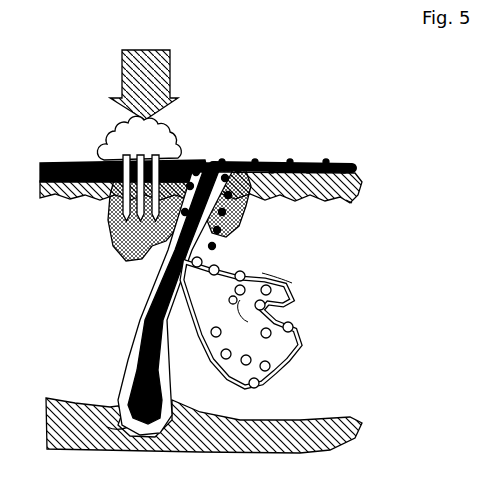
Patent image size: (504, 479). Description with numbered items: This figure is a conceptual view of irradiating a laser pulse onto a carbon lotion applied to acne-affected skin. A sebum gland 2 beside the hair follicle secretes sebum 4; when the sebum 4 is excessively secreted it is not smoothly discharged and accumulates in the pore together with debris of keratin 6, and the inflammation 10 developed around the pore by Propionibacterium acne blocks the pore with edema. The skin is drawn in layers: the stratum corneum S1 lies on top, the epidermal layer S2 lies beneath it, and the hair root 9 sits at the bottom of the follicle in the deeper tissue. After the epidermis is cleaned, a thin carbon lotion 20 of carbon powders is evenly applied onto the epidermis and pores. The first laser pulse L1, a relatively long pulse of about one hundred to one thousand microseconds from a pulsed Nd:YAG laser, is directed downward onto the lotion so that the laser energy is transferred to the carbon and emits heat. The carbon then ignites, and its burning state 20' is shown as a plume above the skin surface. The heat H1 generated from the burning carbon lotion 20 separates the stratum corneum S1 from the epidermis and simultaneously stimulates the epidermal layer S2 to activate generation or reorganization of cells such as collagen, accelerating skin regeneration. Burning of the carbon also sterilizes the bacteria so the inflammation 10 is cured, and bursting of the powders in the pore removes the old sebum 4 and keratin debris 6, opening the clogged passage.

The first laser pulse L1 is at (170, 78).
The burning state of the carbon lotion 20' is at (112, 133).
The carbon lotion 20 is at (196, 150).
The debris of keratin 6 is at (208, 167).
The stratum corneum S1 is at (352, 173).
The epidermal layer S2 is at (350, 204).
The heat H1 is at (122, 207).
The inflammation 10 is at (122, 246).
The sebum 4 is at (263, 273).
The sebum gland 2 is at (330, 350).
The hair root 9 is at (87, 410).